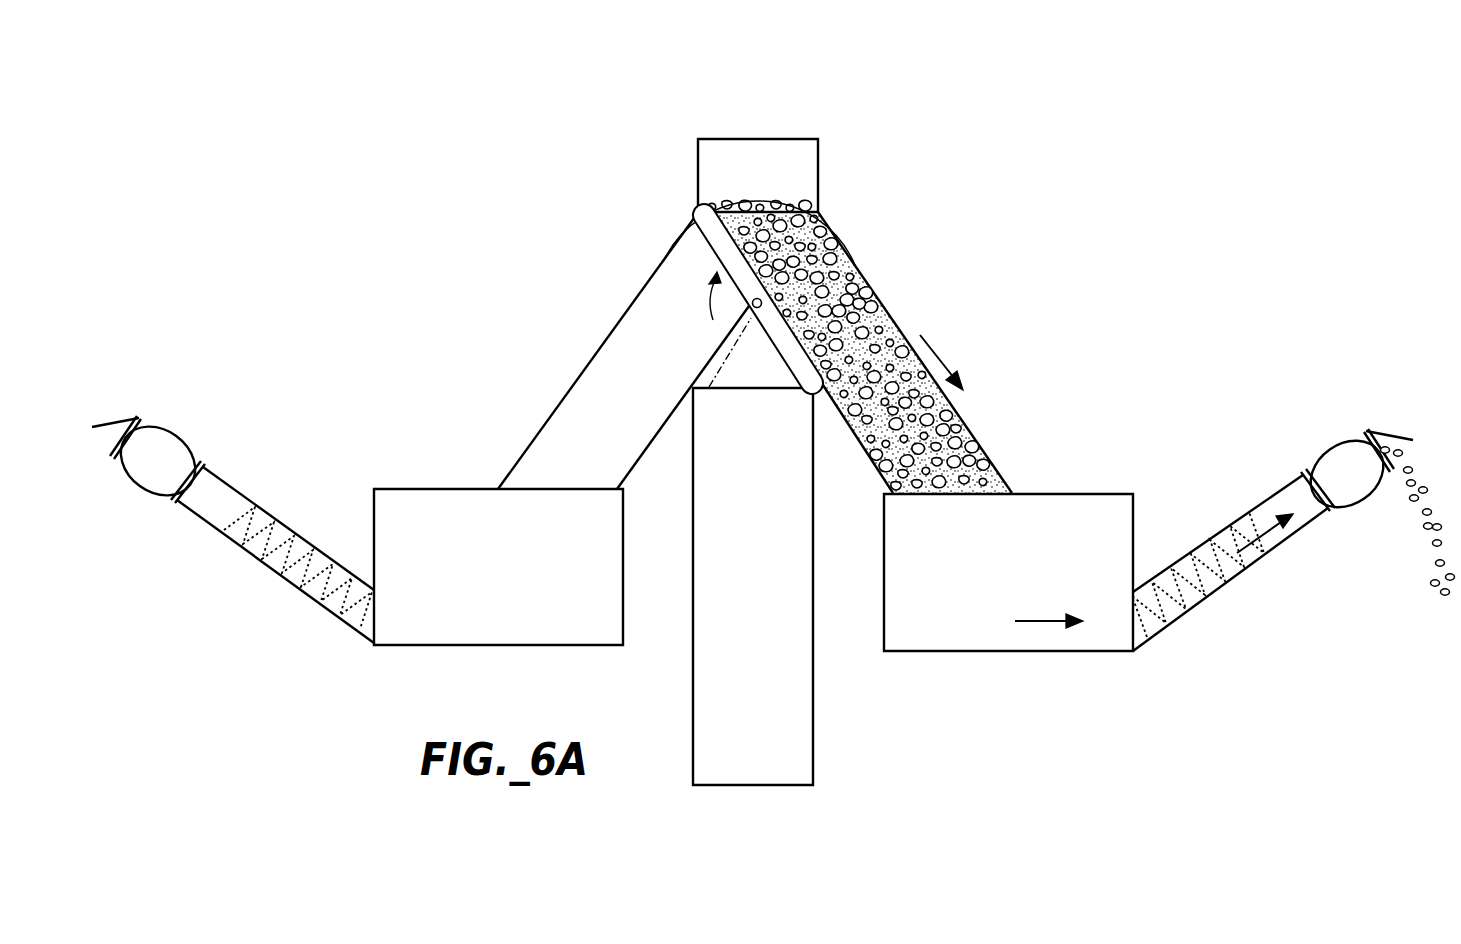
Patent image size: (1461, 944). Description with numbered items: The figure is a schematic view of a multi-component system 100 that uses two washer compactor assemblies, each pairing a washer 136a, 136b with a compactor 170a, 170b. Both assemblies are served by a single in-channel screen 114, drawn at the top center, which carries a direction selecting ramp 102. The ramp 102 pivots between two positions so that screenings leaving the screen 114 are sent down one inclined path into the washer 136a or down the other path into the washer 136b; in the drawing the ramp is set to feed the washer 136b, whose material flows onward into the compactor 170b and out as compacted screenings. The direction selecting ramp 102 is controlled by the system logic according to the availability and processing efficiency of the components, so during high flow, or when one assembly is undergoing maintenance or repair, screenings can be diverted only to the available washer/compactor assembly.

The multi-component system 100 is at (1024, 93).
The direction selecting ramp 102 is at (702, 240).
The in-channel screen 114 is at (807, 170).
The washer 136a is at (438, 503).
The washer 136b is at (1037, 508).
The compactor 170a is at (258, 512).
The compactor 170b is at (1247, 518).